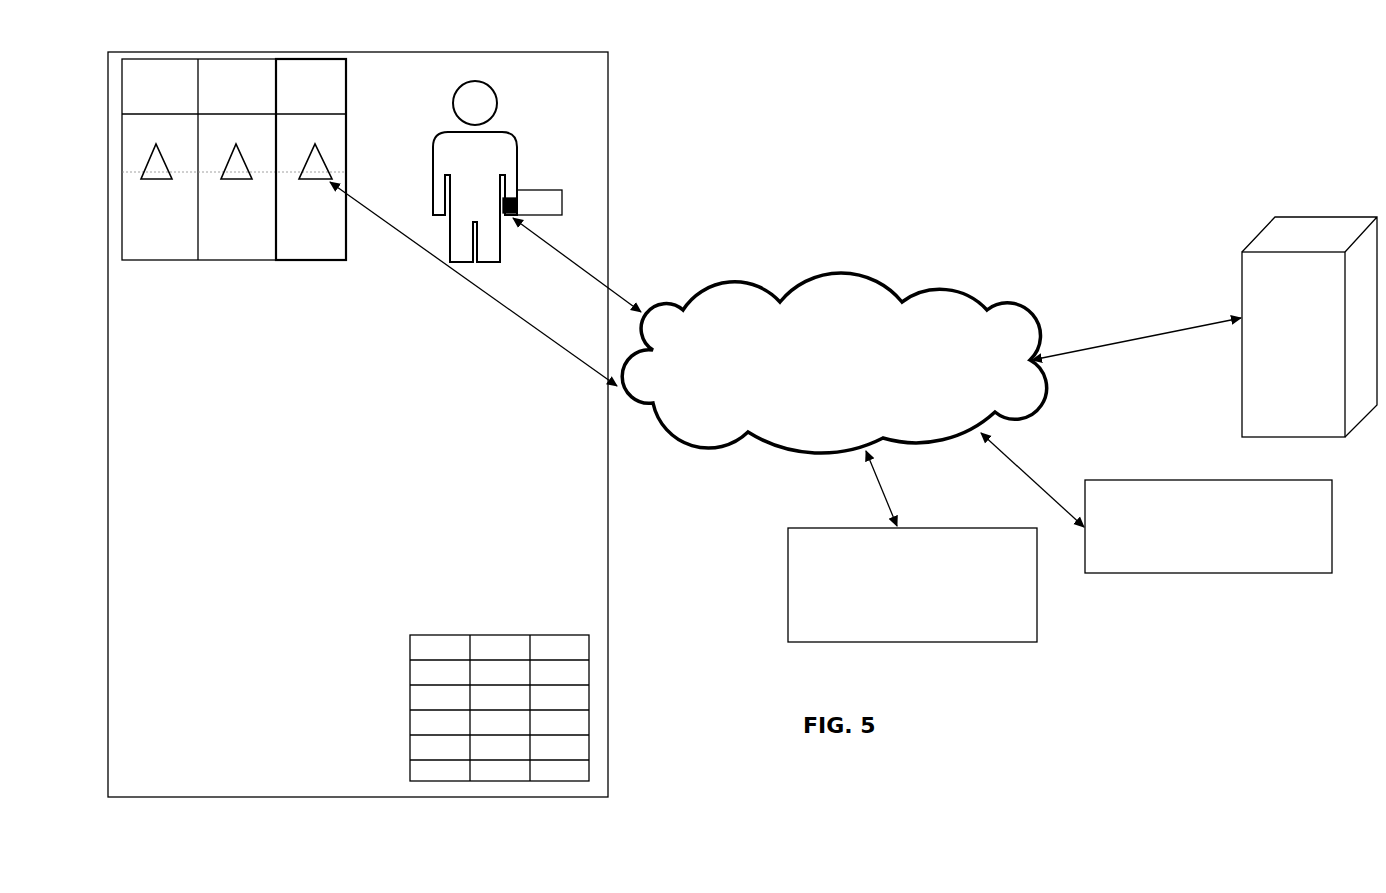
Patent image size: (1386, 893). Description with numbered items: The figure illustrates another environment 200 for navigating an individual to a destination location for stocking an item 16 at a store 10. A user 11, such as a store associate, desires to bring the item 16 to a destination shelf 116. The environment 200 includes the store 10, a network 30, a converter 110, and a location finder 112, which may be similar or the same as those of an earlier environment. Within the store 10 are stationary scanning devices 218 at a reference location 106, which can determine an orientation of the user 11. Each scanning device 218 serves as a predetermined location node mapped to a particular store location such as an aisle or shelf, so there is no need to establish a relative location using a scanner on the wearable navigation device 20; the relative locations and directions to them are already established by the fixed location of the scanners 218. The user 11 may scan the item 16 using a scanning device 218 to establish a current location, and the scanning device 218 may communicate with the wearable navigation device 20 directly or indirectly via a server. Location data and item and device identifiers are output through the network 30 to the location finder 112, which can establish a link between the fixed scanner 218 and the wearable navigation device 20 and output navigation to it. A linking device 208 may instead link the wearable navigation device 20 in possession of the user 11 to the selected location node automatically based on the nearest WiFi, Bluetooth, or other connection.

The store 10 is at (575, 87).
The user 11 is at (434, 140).
The item 16 is at (557, 213).
The wearable navigation device 20 is at (507, 195).
The network 30 is at (888, 363).
The reference location 106 is at (238, 262).
The converter 110 is at (900, 632).
The location finder 112 is at (1316, 375).
The destination shelf 116 is at (467, 633).
The environment 200 is at (1180, 158).
The linking device 208 is at (1143, 556).
The stationary scanning device 218 is at (168, 135).